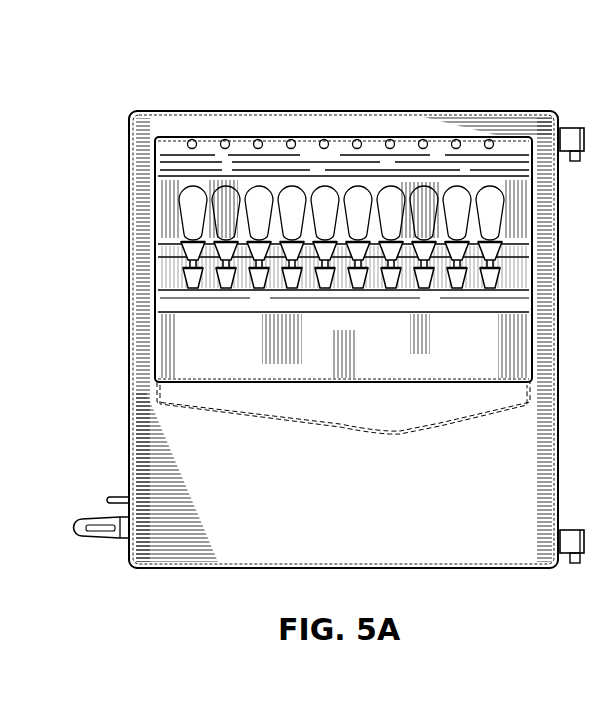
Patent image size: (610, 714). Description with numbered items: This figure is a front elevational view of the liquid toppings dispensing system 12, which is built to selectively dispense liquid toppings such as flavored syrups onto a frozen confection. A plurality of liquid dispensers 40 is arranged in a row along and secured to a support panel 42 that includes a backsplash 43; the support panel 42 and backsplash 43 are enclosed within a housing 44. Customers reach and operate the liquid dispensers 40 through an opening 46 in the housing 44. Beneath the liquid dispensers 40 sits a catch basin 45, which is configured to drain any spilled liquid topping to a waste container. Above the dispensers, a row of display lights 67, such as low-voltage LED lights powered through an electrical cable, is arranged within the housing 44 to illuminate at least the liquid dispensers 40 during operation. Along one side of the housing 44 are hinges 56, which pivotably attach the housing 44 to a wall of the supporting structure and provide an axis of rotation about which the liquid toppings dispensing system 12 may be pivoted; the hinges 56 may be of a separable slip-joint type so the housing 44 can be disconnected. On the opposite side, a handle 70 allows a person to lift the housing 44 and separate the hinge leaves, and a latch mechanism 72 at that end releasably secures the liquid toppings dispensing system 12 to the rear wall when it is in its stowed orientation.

The liquid toppings dispensing system 12 is at (342, 66).
The liquid dispensers 40 is at (226, 289).
The support panel 42 is at (170, 256).
The backsplash 43 is at (260, 355).
The housing 44 is at (370, 484).
The catch basin 45 is at (440, 421).
The opening 46 is at (530, 361).
The hinges 56 is at (568, 128).
The display lights 67 is at (192, 149).
The handle 70 is at (115, 497).
The latch mechanism 72 is at (103, 540).